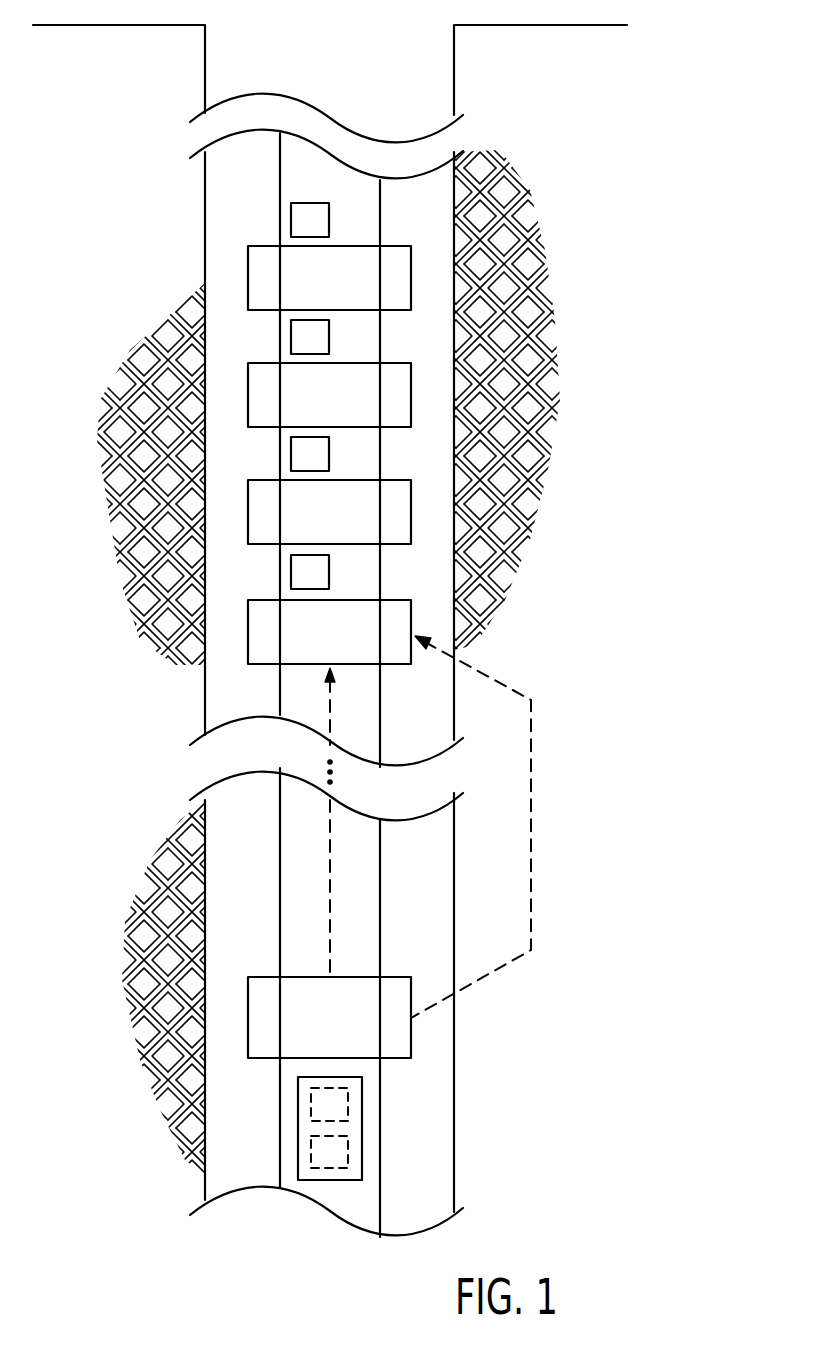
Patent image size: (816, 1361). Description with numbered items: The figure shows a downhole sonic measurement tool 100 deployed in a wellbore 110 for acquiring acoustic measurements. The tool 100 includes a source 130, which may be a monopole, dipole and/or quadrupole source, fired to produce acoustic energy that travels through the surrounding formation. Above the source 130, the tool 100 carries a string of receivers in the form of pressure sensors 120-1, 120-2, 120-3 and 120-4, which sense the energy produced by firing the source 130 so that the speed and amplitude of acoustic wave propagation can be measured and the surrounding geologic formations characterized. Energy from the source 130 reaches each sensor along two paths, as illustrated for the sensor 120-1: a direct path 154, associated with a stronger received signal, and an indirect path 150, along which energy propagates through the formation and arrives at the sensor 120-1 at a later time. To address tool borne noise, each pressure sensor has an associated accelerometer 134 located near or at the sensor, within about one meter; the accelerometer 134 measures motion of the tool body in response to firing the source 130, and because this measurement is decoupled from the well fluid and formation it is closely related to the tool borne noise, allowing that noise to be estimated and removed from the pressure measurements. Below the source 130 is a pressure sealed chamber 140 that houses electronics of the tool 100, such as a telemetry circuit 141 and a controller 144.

The sonic measurement tool 100 is at (412, 318).
The wellbore 110 is at (465, 67).
The pressure sensor 120-1 is at (403, 600).
The pressure sensor 120-2 is at (403, 480).
The pressure sensor 120-3 is at (405, 363).
The pressure sensor 120-4 is at (405, 246).
The source 130 is at (391, 1058).
The accelerometer 134 is at (291, 220).
The pressure sealed chamber 140 is at (362, 1128).
The telemetry circuit 141 is at (311, 1100).
The controller 144 is at (311, 1150).
The indirect path 150 is at (531, 826).
The direct path 154 is at (330, 707).